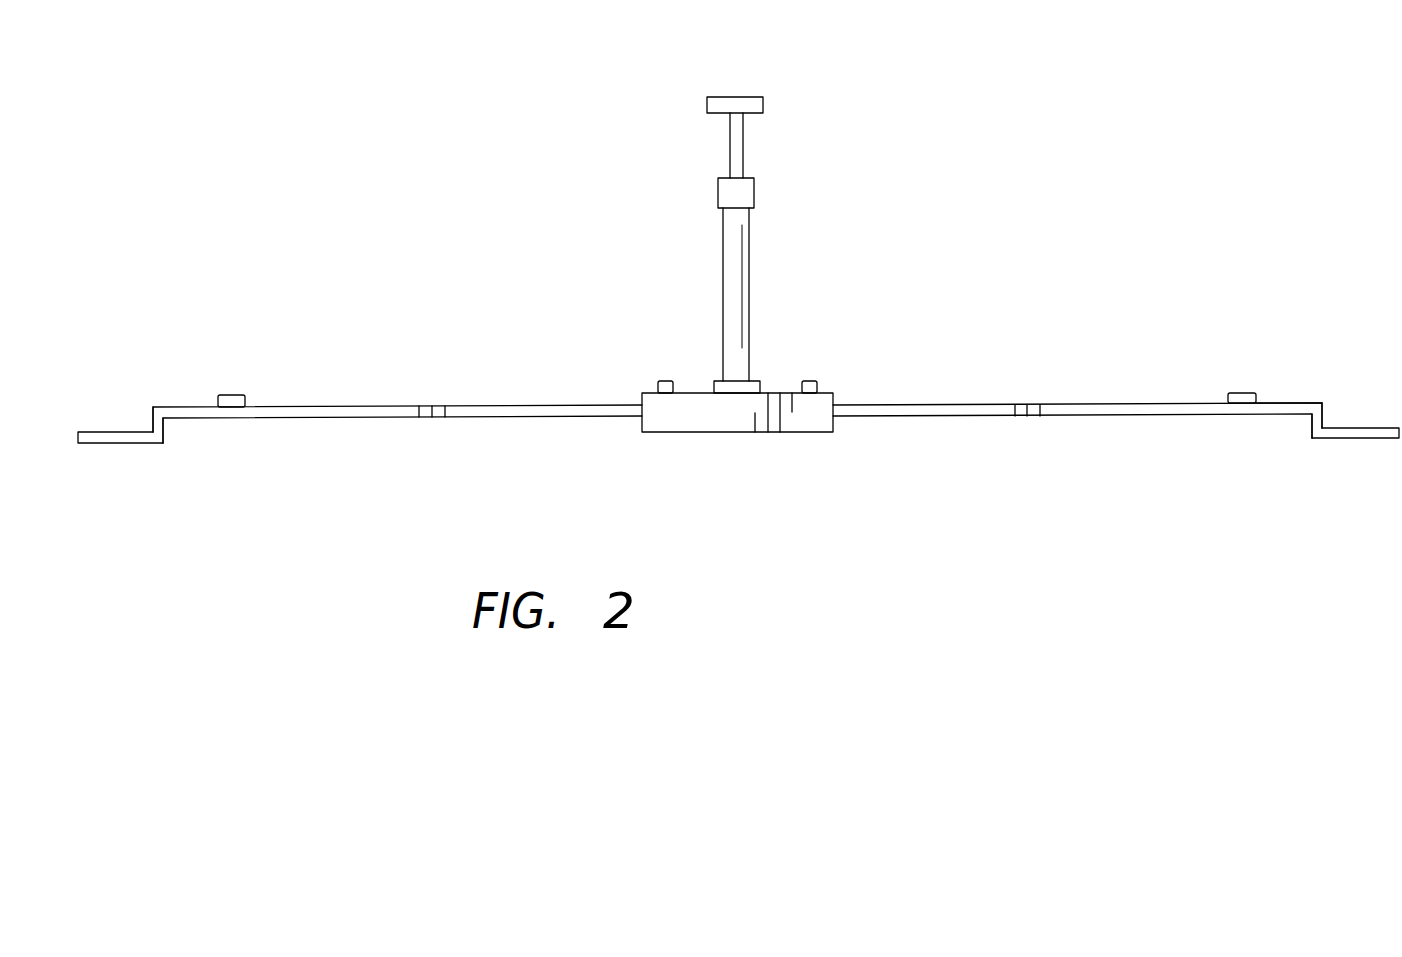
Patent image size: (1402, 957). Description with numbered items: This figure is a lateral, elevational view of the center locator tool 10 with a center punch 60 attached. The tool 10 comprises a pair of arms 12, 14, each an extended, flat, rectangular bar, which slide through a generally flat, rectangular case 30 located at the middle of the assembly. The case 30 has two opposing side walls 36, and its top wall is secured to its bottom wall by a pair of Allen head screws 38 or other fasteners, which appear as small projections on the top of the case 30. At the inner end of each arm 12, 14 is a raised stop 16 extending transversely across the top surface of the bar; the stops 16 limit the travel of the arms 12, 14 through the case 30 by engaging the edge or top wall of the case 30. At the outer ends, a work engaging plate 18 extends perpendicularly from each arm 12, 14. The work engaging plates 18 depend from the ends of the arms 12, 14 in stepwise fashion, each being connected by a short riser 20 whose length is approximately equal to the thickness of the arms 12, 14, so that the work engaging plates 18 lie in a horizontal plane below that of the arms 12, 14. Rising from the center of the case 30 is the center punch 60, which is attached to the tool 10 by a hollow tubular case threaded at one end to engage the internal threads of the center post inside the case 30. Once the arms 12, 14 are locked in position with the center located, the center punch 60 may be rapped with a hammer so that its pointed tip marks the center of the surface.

The center locator tool 10 is at (1212, 134).
The arm 12 is at (395, 418).
The arm 14 is at (1270, 403).
The raised stop 16 is at (223, 394).
The work engaging plate 18 is at (122, 443).
The riser 20 is at (165, 433).
The case 30 is at (817, 451).
The side wall 36 is at (670, 432).
The Allen head screw 38 is at (660, 381).
The center punch 60 is at (748, 258).